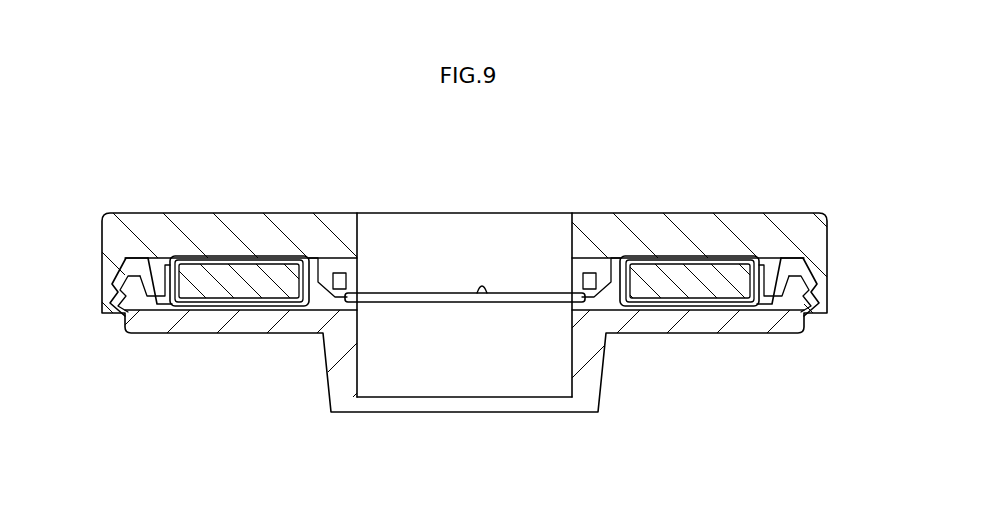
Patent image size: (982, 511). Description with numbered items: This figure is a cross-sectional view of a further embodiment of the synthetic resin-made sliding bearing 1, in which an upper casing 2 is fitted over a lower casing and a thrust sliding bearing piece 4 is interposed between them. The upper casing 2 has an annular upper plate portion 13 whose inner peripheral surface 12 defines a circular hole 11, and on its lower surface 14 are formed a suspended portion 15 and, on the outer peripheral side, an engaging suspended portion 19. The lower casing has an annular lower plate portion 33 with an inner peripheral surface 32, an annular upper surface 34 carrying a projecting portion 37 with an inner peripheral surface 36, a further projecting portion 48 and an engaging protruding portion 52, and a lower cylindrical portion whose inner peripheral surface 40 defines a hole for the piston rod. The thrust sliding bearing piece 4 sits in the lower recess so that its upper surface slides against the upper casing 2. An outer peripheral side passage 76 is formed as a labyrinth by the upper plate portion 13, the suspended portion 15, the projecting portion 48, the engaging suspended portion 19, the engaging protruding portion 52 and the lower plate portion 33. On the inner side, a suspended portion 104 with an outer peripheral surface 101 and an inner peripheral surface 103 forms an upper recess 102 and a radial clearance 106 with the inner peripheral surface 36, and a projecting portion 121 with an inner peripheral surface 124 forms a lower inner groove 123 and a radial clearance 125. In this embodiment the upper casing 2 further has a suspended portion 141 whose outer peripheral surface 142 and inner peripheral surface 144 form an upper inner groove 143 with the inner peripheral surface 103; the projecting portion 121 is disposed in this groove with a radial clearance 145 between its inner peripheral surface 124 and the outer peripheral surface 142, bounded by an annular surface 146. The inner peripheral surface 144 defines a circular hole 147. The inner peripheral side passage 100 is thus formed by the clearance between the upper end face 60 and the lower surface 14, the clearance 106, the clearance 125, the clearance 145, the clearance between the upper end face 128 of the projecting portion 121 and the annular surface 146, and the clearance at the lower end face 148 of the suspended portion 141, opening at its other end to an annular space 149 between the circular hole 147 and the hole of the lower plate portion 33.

The synthetic resin-made sliding bearing 1 is at (146, 344).
The upper casing 2 is at (713, 212).
The thrust sliding bearing piece 4 is at (719, 308).
The circular hole 11 is at (441, 225).
The inner peripheral surface 12 is at (412, 228).
The upper plate portion 13 is at (668, 228).
The lower surface 14 is at (222, 270).
The suspended portion 15 is at (126, 320).
The engaging suspended portion 19 is at (110, 310).
The inner peripheral surface 32 is at (388, 400).
The lower plate portion 33 is at (686, 320).
The upper surface 34 is at (484, 303).
The inner peripheral surface 36 is at (608, 275).
The projecting portion 37 is at (616, 303).
The inner peripheral surface 40 is at (358, 388).
The projecting portion 48 is at (757, 257).
The engaging protruding portion 52 is at (113, 290).
The upper end face 60 is at (625, 265).
The outer peripheral side passage 76 is at (797, 260).
The inner peripheral side passage 100 is at (217, 303).
The outer peripheral surface 101 is at (273, 259).
The upper recess 102 is at (164, 258).
The inner peripheral surface 103 is at (268, 300).
The suspended portion 104 is at (309, 258).
The radial clearance 106 is at (605, 310).
The projecting portion 121 is at (573, 295).
The lower inner groove 123 is at (602, 340).
The inner peripheral surface 124 is at (333, 372).
The radial clearance 125 is at (578, 335).
The upper end face 128 is at (354, 293).
The suspended portion 141 is at (577, 283).
The outer peripheral surface 142 is at (595, 275).
The upper inner groove 143 is at (337, 273).
The inner peripheral surface 144 is at (572, 287).
The radial clearance 145 is at (355, 292).
The annular surface 146 is at (590, 275).
The circular hole 147 is at (448, 277).
The lower end face 148 is at (456, 303).
The annular space 149 is at (424, 303).